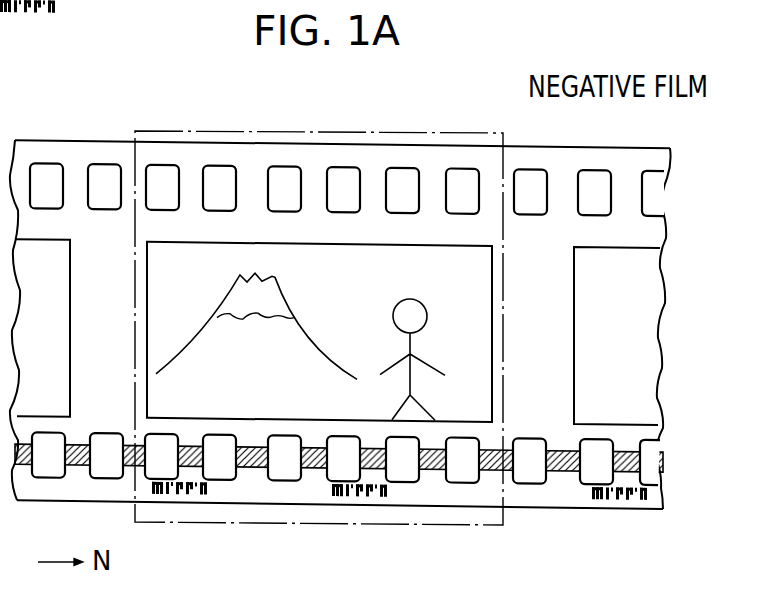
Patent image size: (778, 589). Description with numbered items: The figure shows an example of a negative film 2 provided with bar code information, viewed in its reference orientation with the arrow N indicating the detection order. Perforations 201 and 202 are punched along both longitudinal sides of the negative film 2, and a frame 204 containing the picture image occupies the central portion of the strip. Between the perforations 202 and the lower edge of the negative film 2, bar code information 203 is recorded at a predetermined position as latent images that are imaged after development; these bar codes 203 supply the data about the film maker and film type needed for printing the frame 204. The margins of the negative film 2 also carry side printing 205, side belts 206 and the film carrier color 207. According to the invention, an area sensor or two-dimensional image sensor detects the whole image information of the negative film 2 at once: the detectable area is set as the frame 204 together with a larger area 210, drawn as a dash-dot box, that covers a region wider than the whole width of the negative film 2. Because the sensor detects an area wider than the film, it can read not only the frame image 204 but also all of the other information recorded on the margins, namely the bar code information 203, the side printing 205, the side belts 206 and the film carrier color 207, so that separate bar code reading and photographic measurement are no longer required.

The negative film 2 is at (582, 147).
The perforation 201 is at (656, 198).
The perforation 202 is at (653, 467).
The bar code information 203 is at (210, 490).
The frame 204 is at (147, 263).
The side printing 205 is at (138, 492).
The side belt 206 is at (78, 465).
The film carrier color 207 is at (433, 187).
The larger area 210 is at (218, 131).